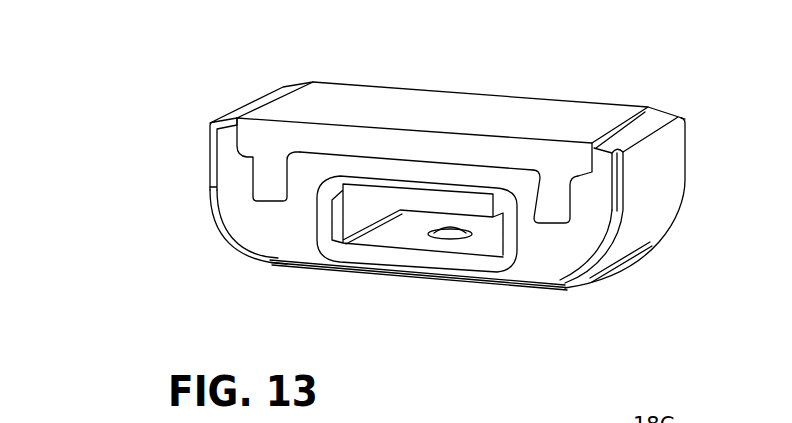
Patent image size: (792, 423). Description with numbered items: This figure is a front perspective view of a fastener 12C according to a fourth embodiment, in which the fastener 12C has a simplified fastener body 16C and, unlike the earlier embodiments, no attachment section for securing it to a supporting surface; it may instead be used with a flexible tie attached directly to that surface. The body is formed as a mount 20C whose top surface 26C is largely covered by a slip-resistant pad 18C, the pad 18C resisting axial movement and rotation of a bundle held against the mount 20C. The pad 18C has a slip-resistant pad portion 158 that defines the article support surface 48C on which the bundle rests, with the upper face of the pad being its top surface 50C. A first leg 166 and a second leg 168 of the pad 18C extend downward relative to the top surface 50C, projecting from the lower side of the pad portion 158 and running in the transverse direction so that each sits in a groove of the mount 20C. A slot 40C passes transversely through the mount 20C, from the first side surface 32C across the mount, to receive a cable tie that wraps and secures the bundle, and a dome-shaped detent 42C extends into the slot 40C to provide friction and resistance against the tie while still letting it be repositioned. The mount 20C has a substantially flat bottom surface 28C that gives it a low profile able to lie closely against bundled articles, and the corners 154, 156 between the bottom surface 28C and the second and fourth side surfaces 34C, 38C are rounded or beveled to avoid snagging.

The fastener 12C is at (173, 52).
The fastener body 16C is at (207, 143).
The slip-resistant pad 18C is at (350, 83).
The mount 20C is at (677, 117).
The top surface 26C is at (258, 100).
The bottom surface 28C is at (450, 285).
The first side surface 32C is at (553, 260).
The second side surface 34C is at (212, 157).
The fourth side surface 38C is at (658, 170).
The slot 40C is at (390, 232).
The detent 42C is at (447, 228).
The article support surface 48C is at (553, 97).
The top surface of the pad 50C is at (467, 113).
The corner 154 is at (230, 243).
The corner 156 is at (563, 288).
The slip-resistant pad portion 158 is at (353, 144).
The first leg 166 is at (267, 190).
The second leg 168 is at (560, 210).